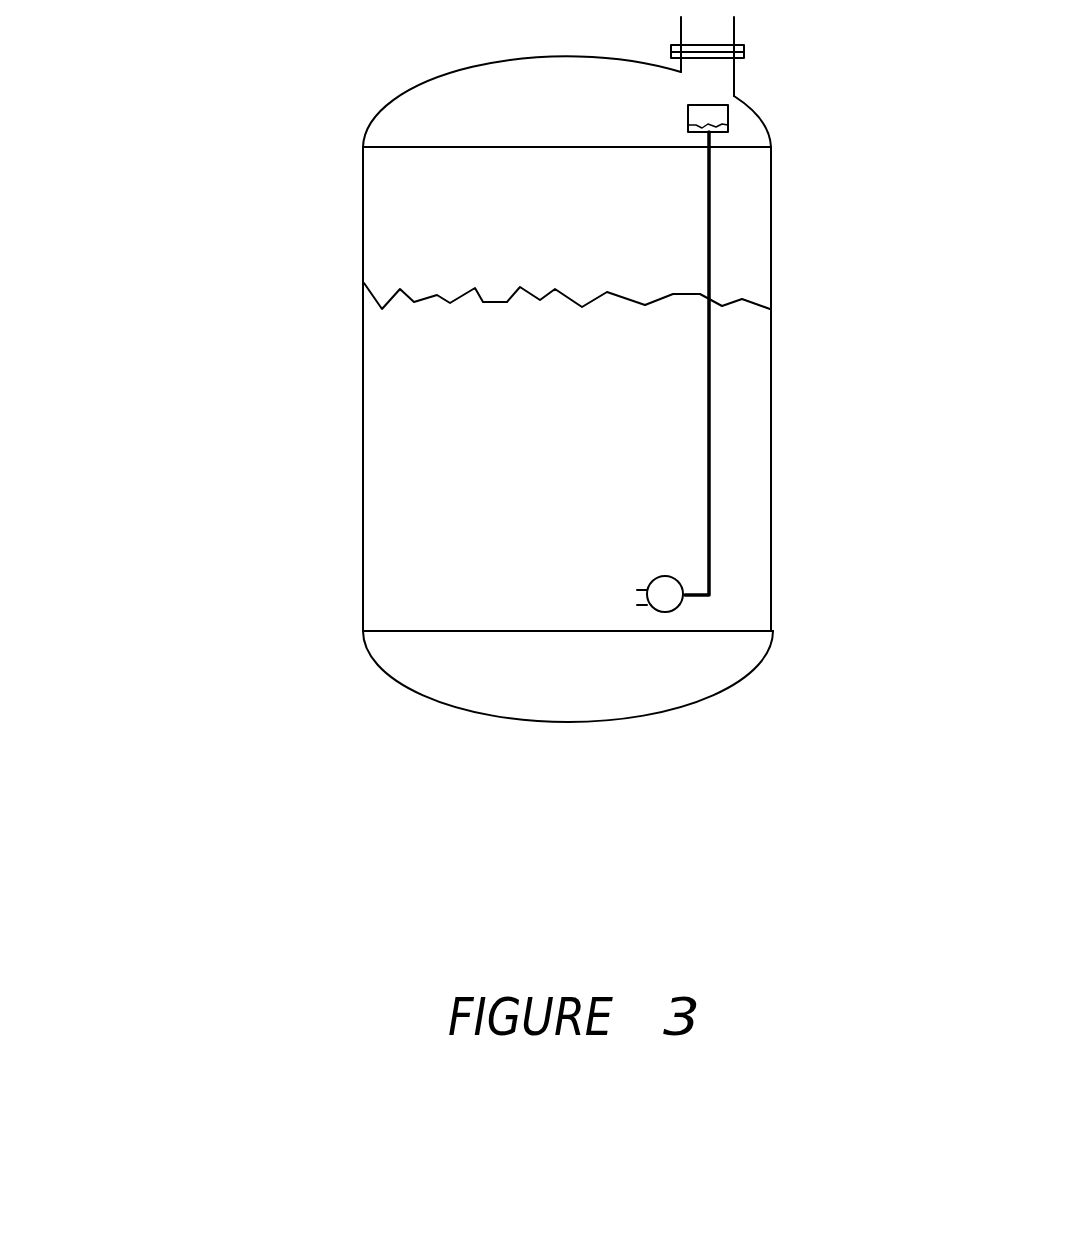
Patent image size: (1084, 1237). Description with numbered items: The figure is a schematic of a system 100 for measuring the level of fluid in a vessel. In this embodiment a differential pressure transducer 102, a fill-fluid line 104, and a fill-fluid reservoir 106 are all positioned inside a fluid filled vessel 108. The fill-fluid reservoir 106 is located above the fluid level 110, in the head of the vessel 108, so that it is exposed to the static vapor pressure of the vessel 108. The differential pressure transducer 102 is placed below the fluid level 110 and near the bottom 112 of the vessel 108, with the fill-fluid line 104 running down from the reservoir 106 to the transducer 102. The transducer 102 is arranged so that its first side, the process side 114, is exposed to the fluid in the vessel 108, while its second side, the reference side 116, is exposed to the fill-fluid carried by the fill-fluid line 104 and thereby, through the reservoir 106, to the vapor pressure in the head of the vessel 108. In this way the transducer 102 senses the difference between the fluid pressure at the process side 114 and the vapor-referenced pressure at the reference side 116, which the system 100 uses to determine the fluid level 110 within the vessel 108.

The system 100 is at (177, 587).
The differential pressure transducer 102 is at (660, 607).
The fill-fluid line 104 is at (711, 505).
The fill-fluid reservoir 106 is at (726, 114).
The fluid filled vessel 108 is at (363, 387).
The fluid level 110 is at (770, 309).
The bottom 112 is at (580, 723).
The process side 114 is at (633, 597).
The reference side 116 is at (687, 590).